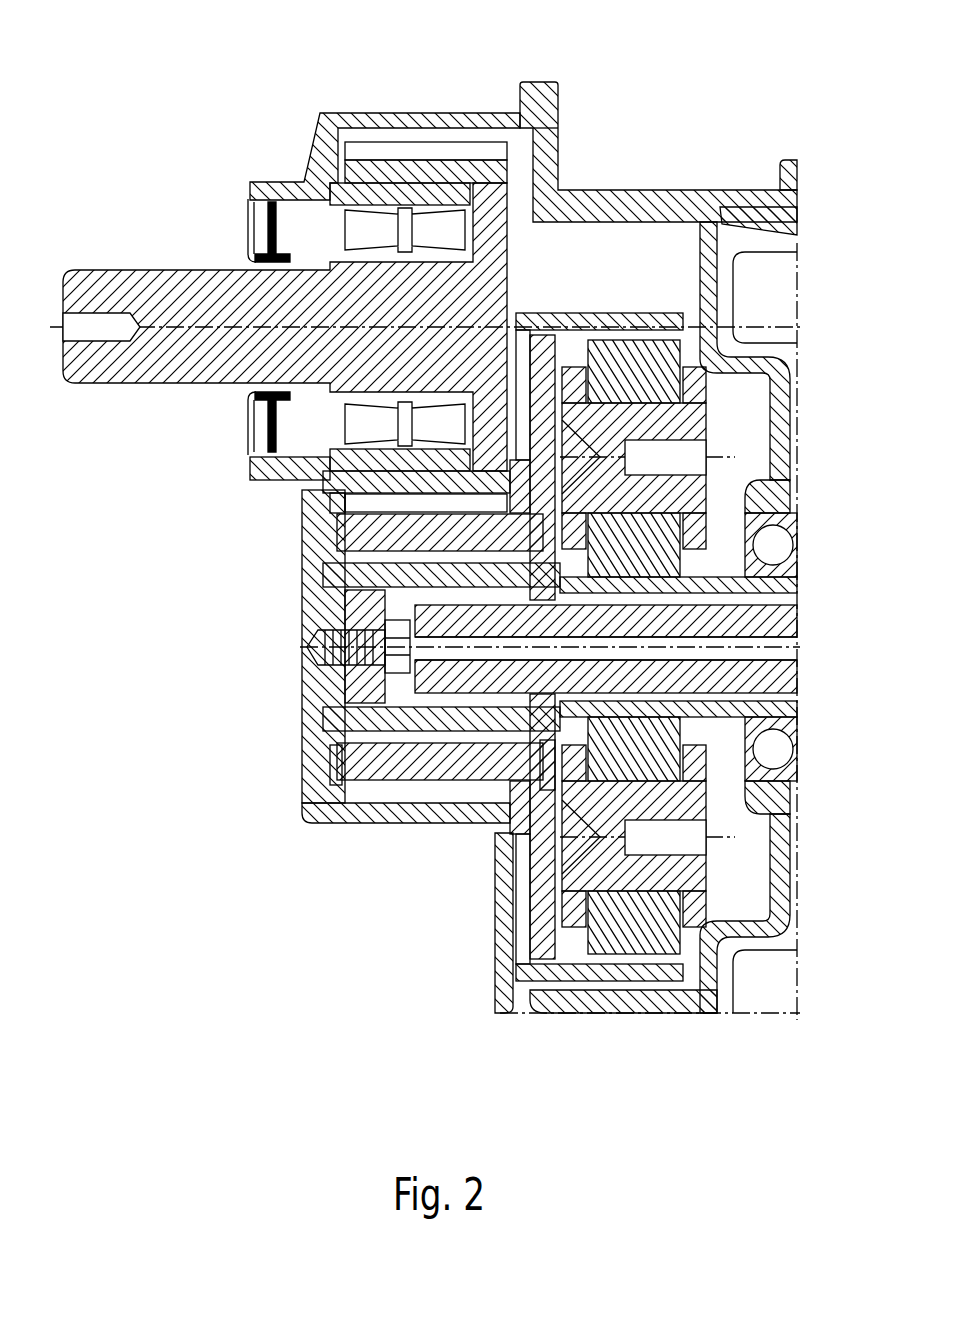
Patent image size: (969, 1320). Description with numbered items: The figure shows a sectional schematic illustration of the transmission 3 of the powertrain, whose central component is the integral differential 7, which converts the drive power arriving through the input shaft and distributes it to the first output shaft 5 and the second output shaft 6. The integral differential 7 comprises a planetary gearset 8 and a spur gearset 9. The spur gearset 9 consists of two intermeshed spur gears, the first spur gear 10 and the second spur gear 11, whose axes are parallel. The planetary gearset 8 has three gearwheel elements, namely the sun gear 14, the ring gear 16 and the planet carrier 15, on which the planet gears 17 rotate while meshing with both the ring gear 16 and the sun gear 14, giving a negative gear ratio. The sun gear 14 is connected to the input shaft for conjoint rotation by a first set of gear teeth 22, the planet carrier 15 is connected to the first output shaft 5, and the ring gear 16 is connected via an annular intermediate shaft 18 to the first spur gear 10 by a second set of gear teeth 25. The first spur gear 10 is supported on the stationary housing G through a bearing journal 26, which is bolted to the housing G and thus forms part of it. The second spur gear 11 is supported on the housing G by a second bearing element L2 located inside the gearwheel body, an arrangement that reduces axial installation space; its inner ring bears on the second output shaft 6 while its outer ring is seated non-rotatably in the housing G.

The transmission 3 is at (614, 98).
The first output shaft 5 is at (765, 625).
The second output shaft 6 is at (120, 293).
The integral differential 7 is at (622, 152).
The planetary gearset 8 is at (640, 290).
The spur gearset 9 is at (425, 108).
The first spur gear 10 is at (350, 770).
The second spur gear 11 is at (345, 487).
The sun gear 14 is at (760, 710).
The planet carrier 15 is at (540, 762).
The ring gear 16 is at (610, 970).
The planet gears 17 is at (555, 932).
The annular intermediate shaft 18 is at (540, 945).
The first set of gear teeth 22 is at (345, 580).
The second set of gear teeth 25 is at (515, 820).
The bearing journal 26 is at (350, 690).
The housing G is at (360, 124).
The second bearing element L2 is at (462, 185).